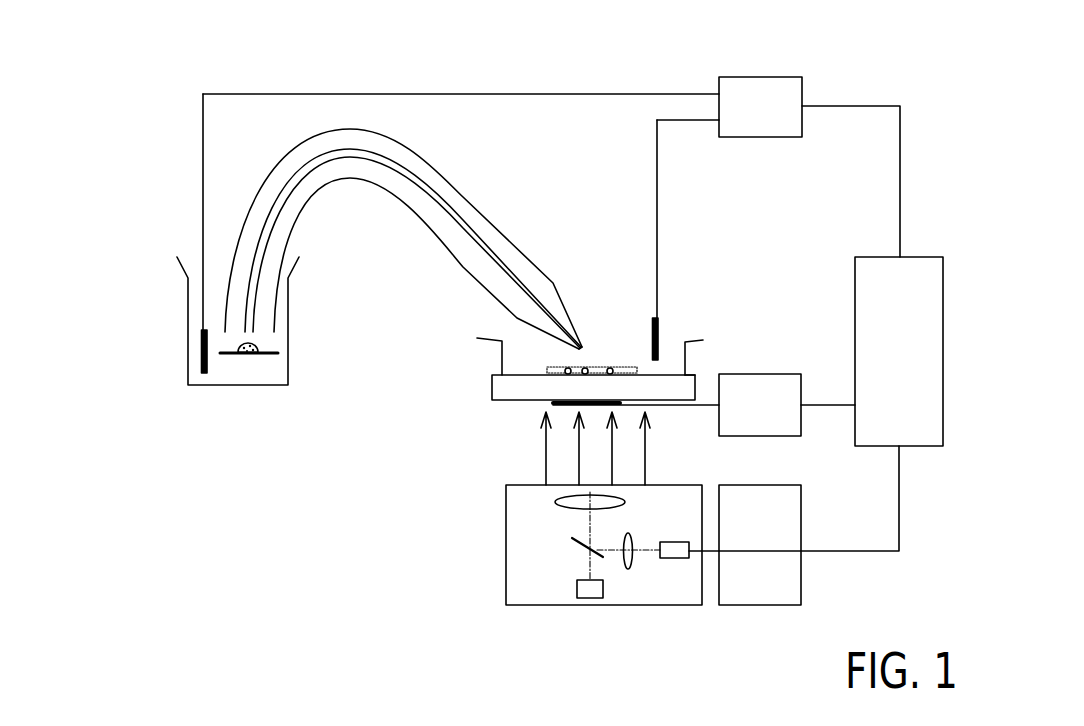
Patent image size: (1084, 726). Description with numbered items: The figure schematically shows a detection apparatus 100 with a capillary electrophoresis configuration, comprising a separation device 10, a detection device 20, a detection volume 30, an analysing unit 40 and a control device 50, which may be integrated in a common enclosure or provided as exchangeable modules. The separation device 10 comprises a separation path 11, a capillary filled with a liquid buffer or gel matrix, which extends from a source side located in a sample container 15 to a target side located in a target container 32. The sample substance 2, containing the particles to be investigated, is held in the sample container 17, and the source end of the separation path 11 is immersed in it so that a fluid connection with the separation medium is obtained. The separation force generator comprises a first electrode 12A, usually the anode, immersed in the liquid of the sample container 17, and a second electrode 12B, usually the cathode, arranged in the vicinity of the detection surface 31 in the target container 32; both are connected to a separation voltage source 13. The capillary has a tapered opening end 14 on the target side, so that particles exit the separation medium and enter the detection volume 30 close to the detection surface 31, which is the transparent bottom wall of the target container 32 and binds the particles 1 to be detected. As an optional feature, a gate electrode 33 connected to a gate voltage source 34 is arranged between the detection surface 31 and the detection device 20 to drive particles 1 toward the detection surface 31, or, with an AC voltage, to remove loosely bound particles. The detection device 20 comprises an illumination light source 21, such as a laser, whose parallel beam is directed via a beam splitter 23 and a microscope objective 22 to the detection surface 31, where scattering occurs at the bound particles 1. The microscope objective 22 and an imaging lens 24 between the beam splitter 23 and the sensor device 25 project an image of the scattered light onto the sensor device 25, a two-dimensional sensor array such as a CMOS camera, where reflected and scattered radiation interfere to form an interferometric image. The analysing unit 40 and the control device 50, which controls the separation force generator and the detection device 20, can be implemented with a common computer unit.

The detection apparatus 100 is at (152, 77).
The separation device 10 is at (153, 88).
The separation path 11 is at (466, 215).
The first electrode 12A is at (200, 366).
The second electrode 12B is at (660, 334).
The separation voltage source 13 is at (760, 107).
The tapered opening end 14 is at (585, 345).
The sample container 15 is at (288, 340).
The sample container 17 is at (220, 387).
The sample substance 2 is at (260, 354).
The particles 1 is at (587, 368).
The detection volume 30 is at (455, 340).
The detection surface 31 is at (527, 376).
The target container 32 is at (687, 363).
The gate electrode 33 is at (607, 406).
The gate voltage source 34 is at (760, 405).
The detection device 20 is at (545, 598).
The illumination light source 21 is at (590, 587).
The microscope objective 22 is at (562, 503).
The beam splitter 23 is at (603, 557).
The imaging lens 24 is at (633, 555).
The sensor device 25 is at (672, 550).
The analysing unit 40 is at (793, 599).
The control device 50 is at (936, 433).